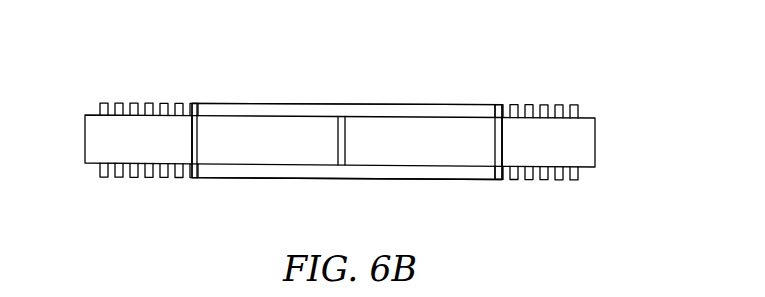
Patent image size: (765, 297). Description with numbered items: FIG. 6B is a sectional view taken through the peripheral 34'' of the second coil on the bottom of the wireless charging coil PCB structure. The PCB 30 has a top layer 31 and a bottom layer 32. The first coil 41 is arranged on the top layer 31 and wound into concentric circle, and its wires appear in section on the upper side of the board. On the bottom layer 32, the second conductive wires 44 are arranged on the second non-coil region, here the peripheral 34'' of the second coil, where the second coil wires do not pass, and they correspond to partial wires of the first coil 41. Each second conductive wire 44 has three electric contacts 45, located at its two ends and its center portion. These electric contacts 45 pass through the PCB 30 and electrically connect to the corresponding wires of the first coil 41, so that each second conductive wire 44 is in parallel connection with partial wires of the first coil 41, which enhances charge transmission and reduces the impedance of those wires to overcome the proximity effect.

The PCB 30 is at (98, 148).
The top layer 31 is at (437, 180).
The bottom layer 32 is at (235, 115).
The peripheral of the second coil 34'' is at (347, 97).
The first coil 41 is at (198, 183).
The second conductive wire 44 is at (198, 101).
The electric contact 45 is at (198, 133).